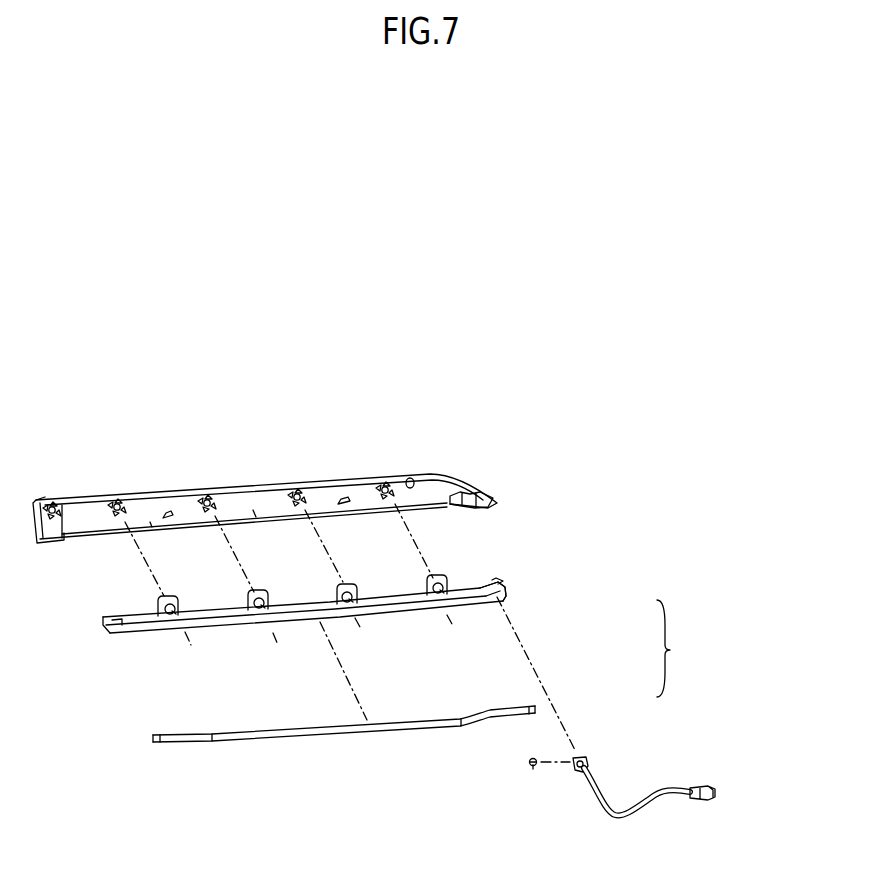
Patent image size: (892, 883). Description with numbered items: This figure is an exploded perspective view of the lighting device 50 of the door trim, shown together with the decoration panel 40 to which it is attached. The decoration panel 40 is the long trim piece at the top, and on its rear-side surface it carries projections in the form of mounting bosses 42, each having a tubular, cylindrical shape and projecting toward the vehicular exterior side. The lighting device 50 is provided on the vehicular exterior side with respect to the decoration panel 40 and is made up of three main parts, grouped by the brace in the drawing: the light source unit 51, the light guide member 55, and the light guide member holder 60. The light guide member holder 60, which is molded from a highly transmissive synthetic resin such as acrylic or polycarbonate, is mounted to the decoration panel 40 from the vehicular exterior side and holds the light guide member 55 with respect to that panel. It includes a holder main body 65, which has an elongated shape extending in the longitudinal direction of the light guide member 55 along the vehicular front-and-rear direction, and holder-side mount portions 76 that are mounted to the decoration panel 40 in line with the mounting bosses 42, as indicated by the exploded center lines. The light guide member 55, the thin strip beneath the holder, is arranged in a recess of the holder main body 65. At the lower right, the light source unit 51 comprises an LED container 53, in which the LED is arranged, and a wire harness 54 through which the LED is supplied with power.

The decoration panel 40 is at (268, 500).
The mounting boss 42 is at (122, 507).
The lighting device 50 is at (426, 677).
The light source unit 51 is at (579, 752).
The LED container 53 is at (582, 770).
The wire harness 54 is at (627, 812).
The light guide member 55 is at (490, 706).
The light guide member holder 60 is at (482, 606).
The holder main body 65 is at (393, 602).
The holder-side mount portion 76 is at (163, 597).